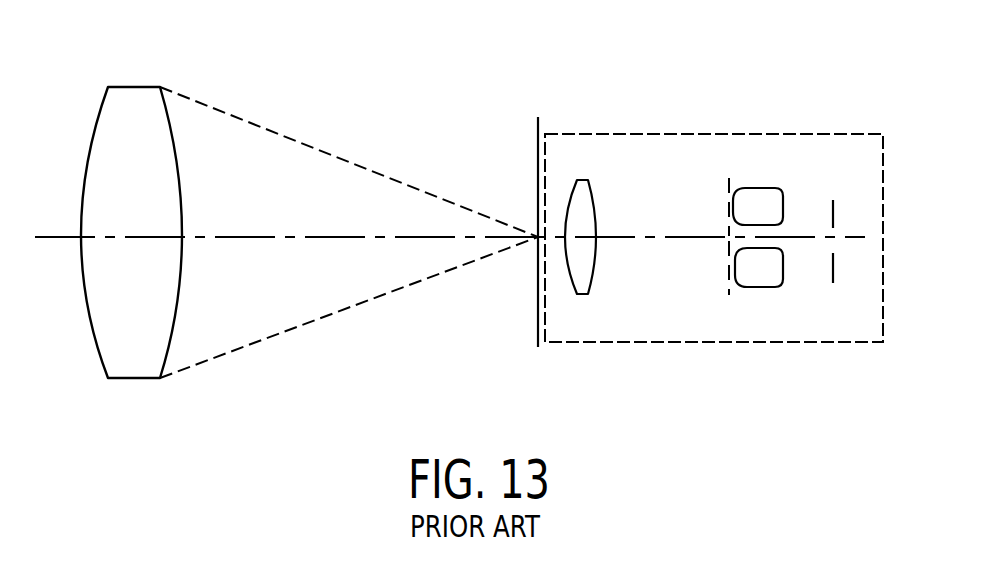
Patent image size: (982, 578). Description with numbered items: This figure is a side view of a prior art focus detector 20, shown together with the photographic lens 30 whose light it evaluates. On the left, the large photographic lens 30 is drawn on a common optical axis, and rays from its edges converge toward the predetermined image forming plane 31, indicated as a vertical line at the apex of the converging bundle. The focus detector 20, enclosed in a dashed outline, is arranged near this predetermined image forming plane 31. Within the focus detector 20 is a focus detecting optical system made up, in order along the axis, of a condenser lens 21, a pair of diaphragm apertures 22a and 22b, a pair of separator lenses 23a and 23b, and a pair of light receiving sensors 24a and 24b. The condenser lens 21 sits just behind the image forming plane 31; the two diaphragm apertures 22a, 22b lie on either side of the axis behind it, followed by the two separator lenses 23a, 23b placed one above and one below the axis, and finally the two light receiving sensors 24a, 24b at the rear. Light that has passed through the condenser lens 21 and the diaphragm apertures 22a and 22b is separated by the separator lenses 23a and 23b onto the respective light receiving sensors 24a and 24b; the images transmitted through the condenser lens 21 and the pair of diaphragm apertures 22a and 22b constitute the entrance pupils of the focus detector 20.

The focus detector 20 is at (702, 342).
The condenser lens 21 is at (598, 277).
The diaphragm aperture 22a is at (725, 213).
The diaphragm aperture 22b is at (722, 267).
The separator lens 23a is at (757, 188).
The separator lens 23b is at (760, 287).
The light receiving sensor 24a is at (833, 214).
The light receiving sensor 24b is at (833, 270).
The photographic lens 30 is at (123, 380).
The predetermined image forming plane 31 is at (538, 313).